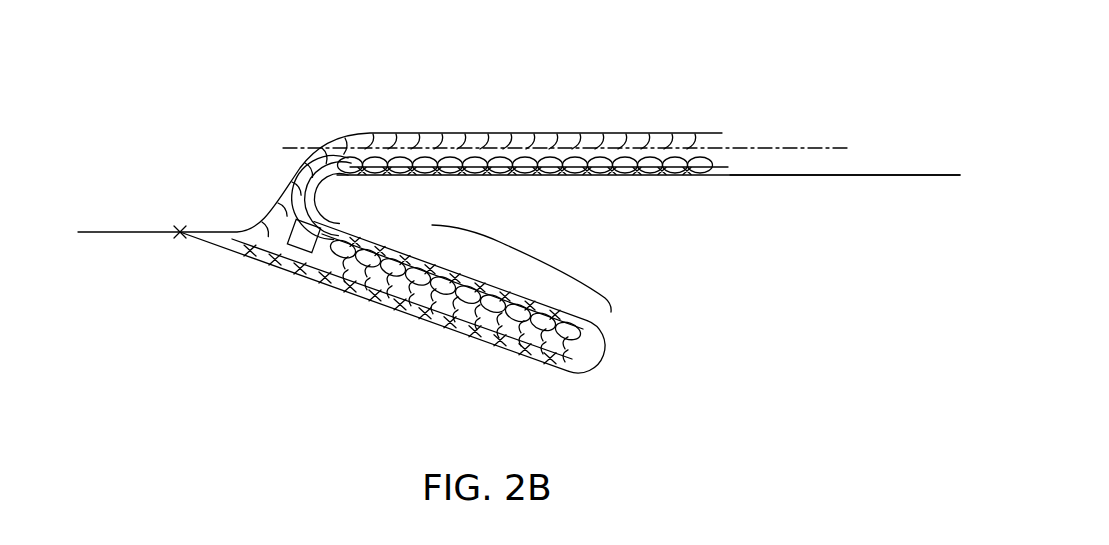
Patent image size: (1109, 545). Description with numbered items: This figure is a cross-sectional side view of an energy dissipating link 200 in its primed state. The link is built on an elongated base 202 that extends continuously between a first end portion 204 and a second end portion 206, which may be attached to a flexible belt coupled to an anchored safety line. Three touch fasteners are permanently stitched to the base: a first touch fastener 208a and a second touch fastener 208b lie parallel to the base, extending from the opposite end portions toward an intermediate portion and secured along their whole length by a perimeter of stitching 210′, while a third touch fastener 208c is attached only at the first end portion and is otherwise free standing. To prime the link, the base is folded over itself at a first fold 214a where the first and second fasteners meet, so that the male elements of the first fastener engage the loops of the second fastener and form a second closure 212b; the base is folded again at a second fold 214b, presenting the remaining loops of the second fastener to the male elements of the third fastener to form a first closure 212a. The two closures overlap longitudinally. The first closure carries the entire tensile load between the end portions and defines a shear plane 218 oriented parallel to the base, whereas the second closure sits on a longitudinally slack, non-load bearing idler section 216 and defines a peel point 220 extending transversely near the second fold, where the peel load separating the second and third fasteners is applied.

The energy dissipating link 200 is at (160, 95).
The elongated base 202 is at (800, 183).
The first end portion 204 is at (112, 231).
The second end portion 206 is at (897, 174).
The first touch fastener 208a is at (348, 288).
The second touch fastener 208b is at (570, 180).
The third touch fastener 208c is at (364, 132).
The perimeter of stitching 210′ is at (643, 176).
The first closure 212a is at (606, 102).
The second closure 212b is at (466, 355).
The first fold 214a is at (600, 353).
The second fold 214b is at (322, 209).
The idler section 216 is at (502, 243).
The shear plane 218 is at (790, 147).
The peel point 220 is at (297, 254).